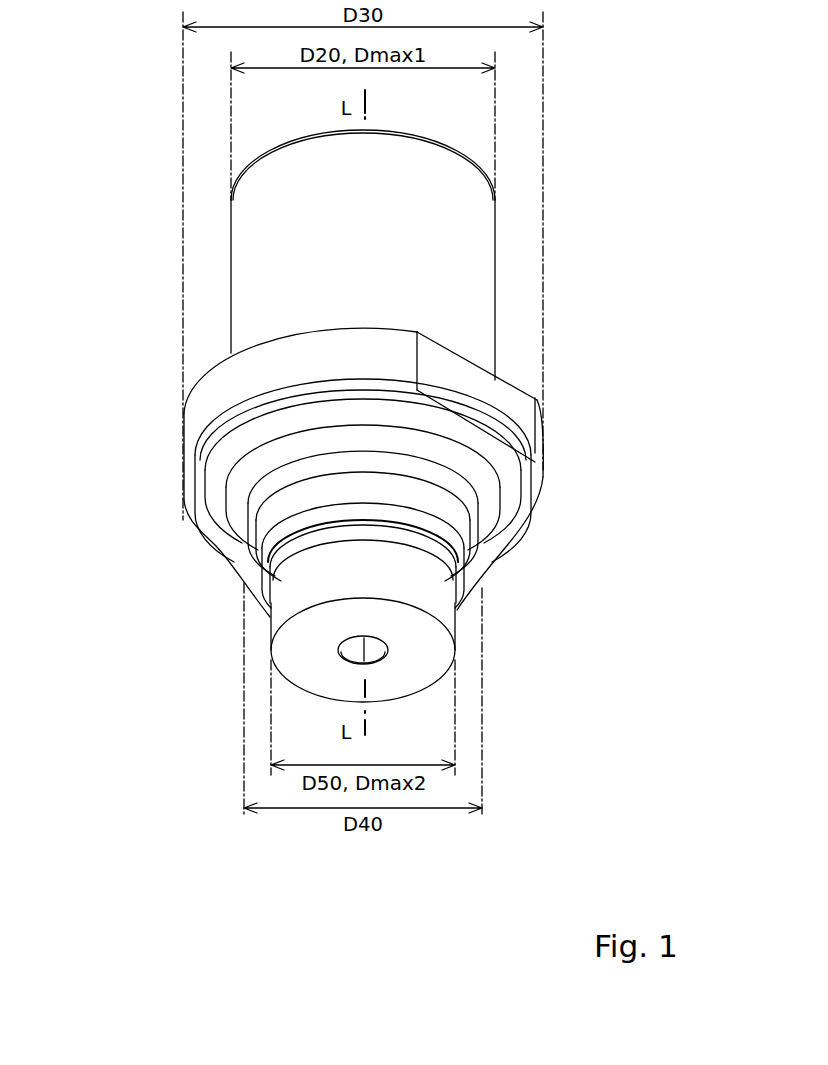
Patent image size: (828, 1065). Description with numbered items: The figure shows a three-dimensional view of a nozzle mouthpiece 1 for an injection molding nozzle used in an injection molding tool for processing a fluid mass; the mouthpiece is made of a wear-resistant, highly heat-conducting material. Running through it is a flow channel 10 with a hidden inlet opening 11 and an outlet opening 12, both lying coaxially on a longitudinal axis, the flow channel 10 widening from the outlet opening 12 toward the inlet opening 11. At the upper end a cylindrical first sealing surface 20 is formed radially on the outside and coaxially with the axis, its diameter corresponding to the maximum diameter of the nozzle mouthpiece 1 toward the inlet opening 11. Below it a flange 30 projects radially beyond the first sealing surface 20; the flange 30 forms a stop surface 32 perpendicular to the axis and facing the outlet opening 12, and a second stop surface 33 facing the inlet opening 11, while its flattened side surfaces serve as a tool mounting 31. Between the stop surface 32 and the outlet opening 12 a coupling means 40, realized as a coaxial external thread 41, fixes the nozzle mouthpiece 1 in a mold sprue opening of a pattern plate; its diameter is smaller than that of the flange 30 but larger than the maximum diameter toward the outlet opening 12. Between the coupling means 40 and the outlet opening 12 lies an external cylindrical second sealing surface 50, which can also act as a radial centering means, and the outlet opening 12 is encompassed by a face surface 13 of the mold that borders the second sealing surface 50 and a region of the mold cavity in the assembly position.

The nozzle mouthpiece 1 is at (355, 267).
The flow channel 10 is at (346, 660).
The inlet opening 11 is at (406, 119).
The outlet opening 12 is at (396, 666).
The face surface 13 is at (435, 668).
The first sealing surface 20 is at (510, 283).
The flange 30 is at (206, 400).
The tool mounting 31 is at (497, 401).
The stop surface 32 is at (514, 546).
The second stop surface 33 is at (519, 372).
The coupling means 40 is at (281, 503).
The external thread 41 is at (258, 517).
The second sealing surface 50 is at (283, 598).